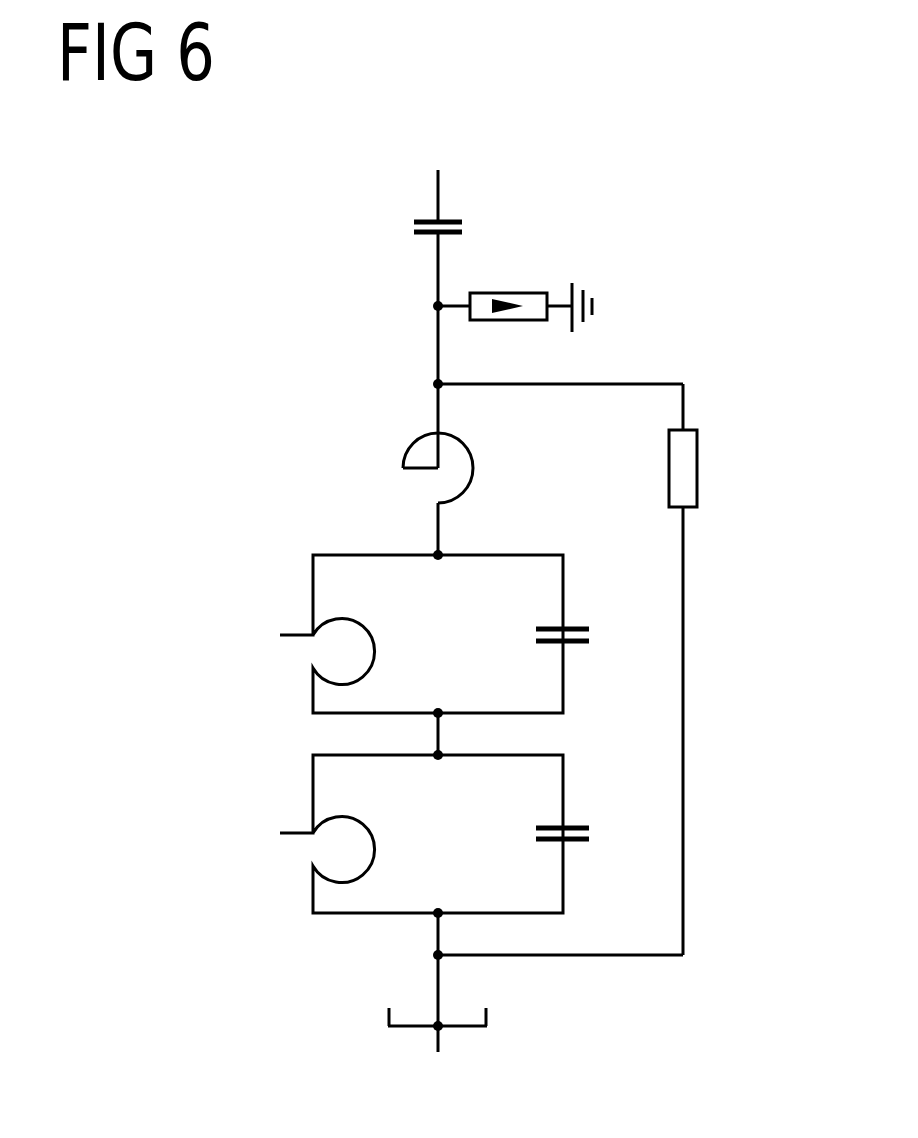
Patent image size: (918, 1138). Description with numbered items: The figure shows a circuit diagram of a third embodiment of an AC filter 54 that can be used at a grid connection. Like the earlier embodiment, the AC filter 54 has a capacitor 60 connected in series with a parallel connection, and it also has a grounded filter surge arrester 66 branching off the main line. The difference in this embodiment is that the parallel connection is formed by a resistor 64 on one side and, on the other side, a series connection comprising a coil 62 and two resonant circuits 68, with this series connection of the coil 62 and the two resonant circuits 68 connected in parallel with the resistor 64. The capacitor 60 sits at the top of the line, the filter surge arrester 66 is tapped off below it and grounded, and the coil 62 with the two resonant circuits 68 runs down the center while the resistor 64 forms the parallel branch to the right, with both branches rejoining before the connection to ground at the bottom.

The AC filter 54 is at (430, 105).
The capacitor 60 is at (421, 218).
The filter surge arrester 66 is at (508, 292).
The coil 62 is at (414, 441).
The resistor 64 is at (699, 468).
The resonant circuits 68 is at (245, 624).